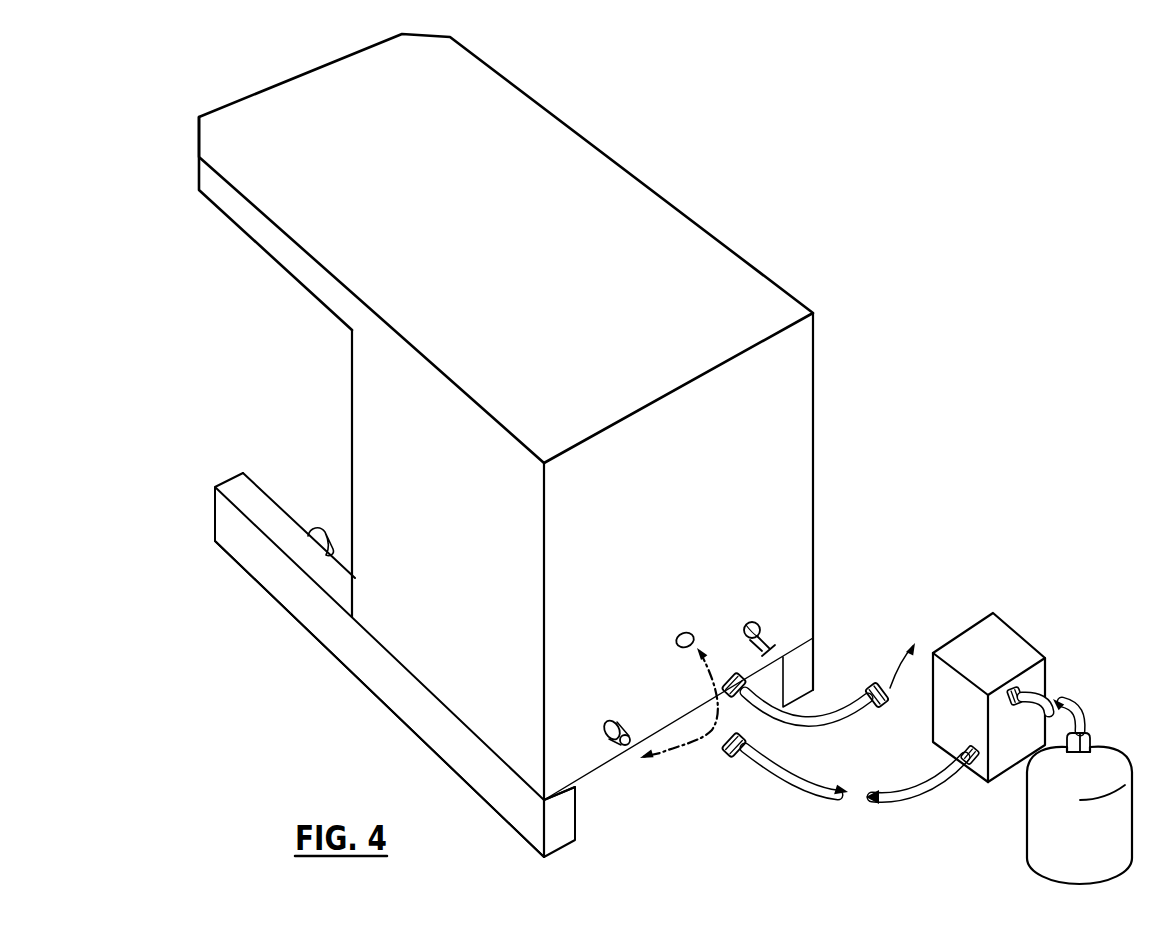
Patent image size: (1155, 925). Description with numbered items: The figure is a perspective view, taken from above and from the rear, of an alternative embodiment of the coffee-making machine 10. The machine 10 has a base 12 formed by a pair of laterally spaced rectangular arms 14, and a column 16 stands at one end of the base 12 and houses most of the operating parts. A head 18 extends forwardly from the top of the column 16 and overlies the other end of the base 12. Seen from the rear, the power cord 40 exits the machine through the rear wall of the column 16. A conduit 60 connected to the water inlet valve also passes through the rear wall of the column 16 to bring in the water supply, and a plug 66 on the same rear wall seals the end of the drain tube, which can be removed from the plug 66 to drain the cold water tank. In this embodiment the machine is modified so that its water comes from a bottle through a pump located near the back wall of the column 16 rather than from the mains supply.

The coffee-making machine 10 is at (525, 445).
The base 12 is at (236, 588).
The rectangular arms 14 is at (320, 620).
The column 16 is at (803, 422).
The head 18 is at (588, 172).
The power cord 40 is at (760, 622).
The conduit 60 is at (827, 717).
The plug 66 is at (624, 727).